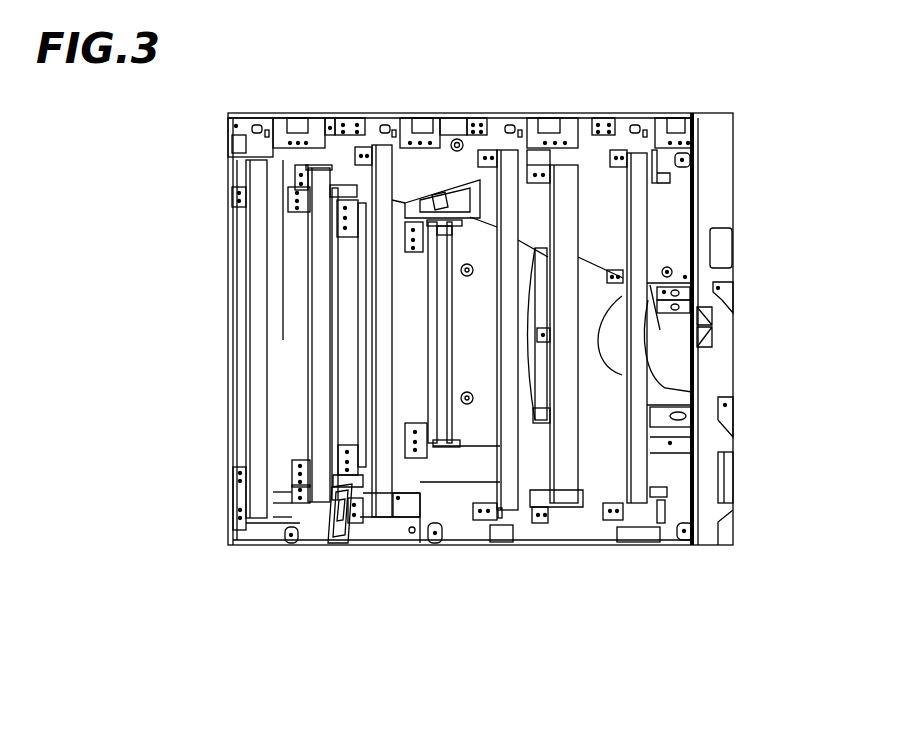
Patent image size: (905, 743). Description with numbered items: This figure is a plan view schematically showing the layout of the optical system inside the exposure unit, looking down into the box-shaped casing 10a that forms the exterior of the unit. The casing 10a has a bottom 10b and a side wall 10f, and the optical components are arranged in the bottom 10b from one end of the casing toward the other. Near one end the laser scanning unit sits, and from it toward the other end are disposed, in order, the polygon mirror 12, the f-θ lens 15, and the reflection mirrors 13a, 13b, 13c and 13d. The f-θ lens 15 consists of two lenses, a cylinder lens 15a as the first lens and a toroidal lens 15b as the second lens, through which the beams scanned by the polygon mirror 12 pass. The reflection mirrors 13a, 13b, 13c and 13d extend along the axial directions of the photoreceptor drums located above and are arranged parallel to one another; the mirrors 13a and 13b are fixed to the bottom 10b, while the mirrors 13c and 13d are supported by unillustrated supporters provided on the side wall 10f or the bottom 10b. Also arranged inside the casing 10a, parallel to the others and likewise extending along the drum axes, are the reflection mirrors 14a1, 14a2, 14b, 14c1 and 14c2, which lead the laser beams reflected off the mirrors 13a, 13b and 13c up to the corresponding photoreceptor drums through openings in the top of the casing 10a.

The casing 10a is at (228, 278).
The bottom 10b is at (283, 355).
The side wall 10f is at (460, 113).
The polygon mirror 12 is at (685, 365).
The reflection mirror 13a is at (432, 455).
The reflection mirror 13b is at (385, 510).
The reflection mirror 13c is at (345, 490).
The reflection mirror 13d is at (262, 508).
The reflection mirror 14a1 is at (570, 477).
The reflection mirror 14a2 is at (637, 510).
The reflection mirror 14b is at (512, 505).
The reflection mirror 14c1 is at (320, 492).
The reflection mirror 14c2 is at (395, 505).
The f-θ lens 15 is at (589, 599).
The cylinder lens 15a is at (597, 485).
The toroidal lens 15b is at (525, 525).